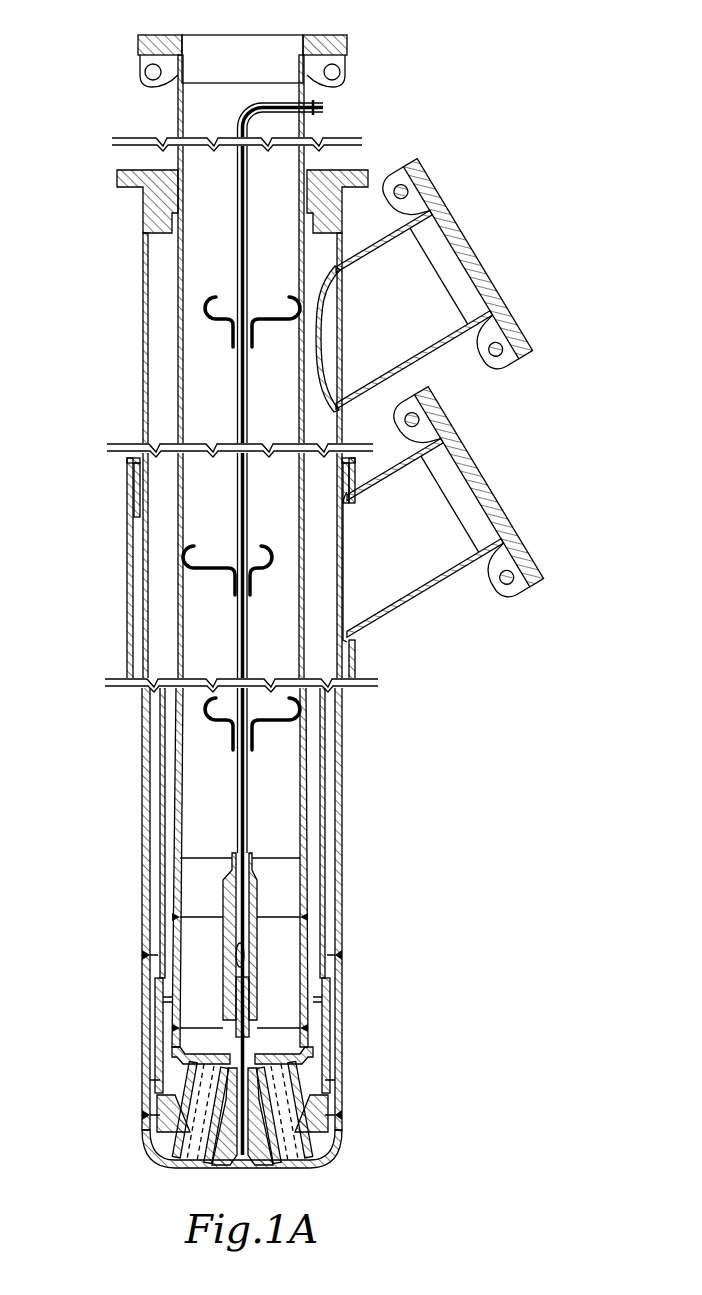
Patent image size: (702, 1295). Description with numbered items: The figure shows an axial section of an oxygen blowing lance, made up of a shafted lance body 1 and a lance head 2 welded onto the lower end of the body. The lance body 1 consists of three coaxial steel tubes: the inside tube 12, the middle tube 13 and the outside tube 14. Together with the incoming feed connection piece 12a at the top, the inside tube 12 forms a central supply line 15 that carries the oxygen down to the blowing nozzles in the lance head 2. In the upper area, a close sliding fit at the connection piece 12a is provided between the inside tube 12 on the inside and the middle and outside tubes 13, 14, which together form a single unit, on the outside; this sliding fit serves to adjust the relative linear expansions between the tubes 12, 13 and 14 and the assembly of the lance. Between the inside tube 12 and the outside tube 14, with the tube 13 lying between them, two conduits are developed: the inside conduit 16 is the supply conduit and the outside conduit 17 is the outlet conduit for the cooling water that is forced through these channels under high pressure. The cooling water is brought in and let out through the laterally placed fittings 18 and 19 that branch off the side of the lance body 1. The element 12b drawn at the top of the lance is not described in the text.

The lance body 1 is at (352, 802).
The lance head 2 is at (360, 1031).
The inside tube 12 is at (178, 484).
The incoming/feed connection piece 12a is at (178, 221).
The supply pipe 12b is at (178, 118).
The middle tube 13 is at (140, 518).
The outside tube 14 is at (127, 537).
The central supply line 15 is at (202, 593).
The inside conduit 16 is at (163, 638).
The outside conduit 17 is at (140, 653).
The lateral fitting 18 is at (458, 267).
The lateral fitting 19 is at (475, 505).